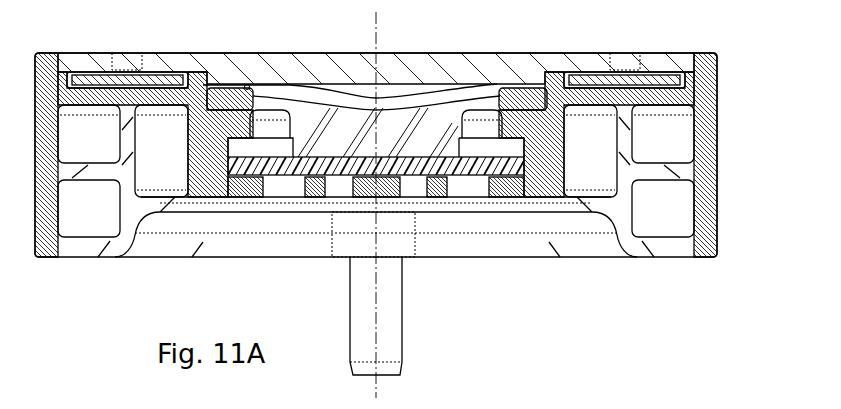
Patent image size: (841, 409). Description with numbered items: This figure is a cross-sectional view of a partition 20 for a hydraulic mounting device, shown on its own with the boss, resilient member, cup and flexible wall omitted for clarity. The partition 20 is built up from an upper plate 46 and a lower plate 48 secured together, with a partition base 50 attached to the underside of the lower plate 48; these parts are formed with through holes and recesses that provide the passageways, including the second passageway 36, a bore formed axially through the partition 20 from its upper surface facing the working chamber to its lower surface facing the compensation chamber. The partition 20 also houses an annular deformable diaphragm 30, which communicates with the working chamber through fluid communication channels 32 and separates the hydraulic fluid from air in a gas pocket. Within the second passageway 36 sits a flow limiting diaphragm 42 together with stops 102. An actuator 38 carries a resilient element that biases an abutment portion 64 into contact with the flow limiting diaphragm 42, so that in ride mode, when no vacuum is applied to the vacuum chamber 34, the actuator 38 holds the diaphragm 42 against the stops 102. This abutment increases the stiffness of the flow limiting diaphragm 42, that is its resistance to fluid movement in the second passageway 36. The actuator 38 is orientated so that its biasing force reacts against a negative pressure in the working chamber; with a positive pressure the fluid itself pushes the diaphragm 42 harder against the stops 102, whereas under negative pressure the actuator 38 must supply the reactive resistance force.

The partition 20 is at (543, 53).
The annular deformable diaphragm 30 is at (657, 78).
The fluid communication channels 32 is at (622, 63).
The vacuum chamber 34 is at (410, 97).
The second passageway 36 is at (268, 147).
The actuator 38 is at (267, 105).
The flow limiting diaphragm 42 is at (455, 167).
The upper plate 46 is at (97, 62).
The lower plate 48 is at (43, 232).
The partition base 50 is at (108, 243).
The abutment portion 64 is at (332, 138).
The stops 102 is at (433, 173).